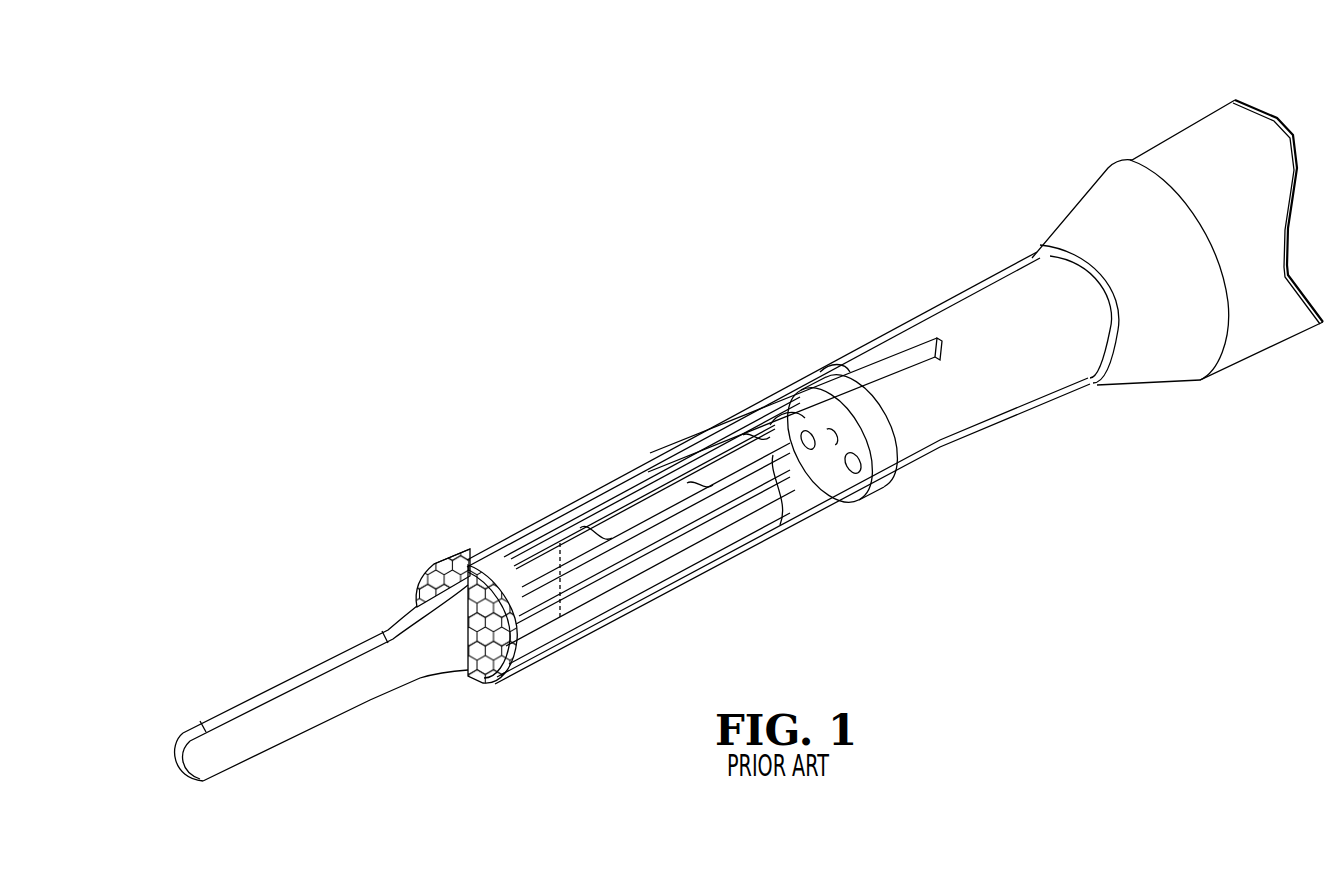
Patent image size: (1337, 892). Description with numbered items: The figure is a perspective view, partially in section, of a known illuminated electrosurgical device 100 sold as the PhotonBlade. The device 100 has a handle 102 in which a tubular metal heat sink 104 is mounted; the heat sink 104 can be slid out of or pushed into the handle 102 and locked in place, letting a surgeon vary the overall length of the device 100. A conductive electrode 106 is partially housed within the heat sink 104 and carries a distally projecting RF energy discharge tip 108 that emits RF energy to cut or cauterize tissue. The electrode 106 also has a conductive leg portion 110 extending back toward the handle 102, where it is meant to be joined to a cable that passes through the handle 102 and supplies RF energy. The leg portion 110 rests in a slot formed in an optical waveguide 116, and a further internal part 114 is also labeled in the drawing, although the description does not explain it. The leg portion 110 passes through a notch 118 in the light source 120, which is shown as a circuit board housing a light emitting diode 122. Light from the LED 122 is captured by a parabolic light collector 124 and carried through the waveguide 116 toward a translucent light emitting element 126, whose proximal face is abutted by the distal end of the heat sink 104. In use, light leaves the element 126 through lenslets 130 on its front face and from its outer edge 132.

The electrosurgical device 100 is at (525, 398).
The handle 102 is at (1155, 140).
The tubular metal heat sink 104 is at (955, 442).
The conductive electrode 106 is at (302, 672).
The RF energy discharge tip 108 is at (180, 754).
The conductive leg portion 110 is at (910, 350).
The inner tube 114 is at (608, 500).
The optical waveguide 116 is at (783, 403).
The notch 118 is at (840, 363).
The light source 120 is at (890, 465).
The light emitting diode 122 is at (857, 478).
The parabolic light collector 124 is at (800, 492).
The translucent light emitting element 126 is at (406, 579).
The lenslets 130 is at (480, 680).
The outer edge 132 is at (452, 547).